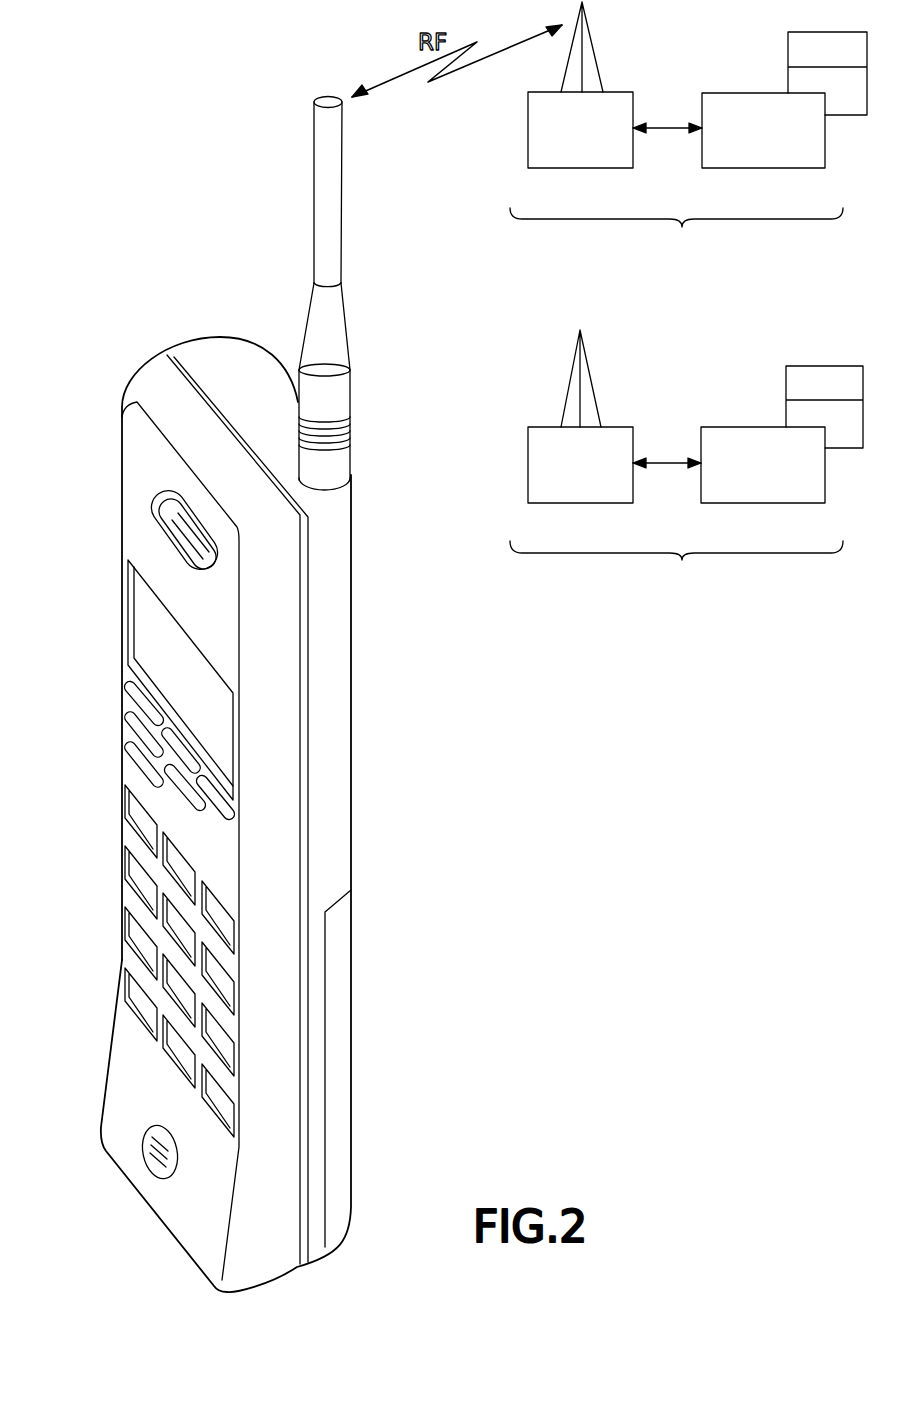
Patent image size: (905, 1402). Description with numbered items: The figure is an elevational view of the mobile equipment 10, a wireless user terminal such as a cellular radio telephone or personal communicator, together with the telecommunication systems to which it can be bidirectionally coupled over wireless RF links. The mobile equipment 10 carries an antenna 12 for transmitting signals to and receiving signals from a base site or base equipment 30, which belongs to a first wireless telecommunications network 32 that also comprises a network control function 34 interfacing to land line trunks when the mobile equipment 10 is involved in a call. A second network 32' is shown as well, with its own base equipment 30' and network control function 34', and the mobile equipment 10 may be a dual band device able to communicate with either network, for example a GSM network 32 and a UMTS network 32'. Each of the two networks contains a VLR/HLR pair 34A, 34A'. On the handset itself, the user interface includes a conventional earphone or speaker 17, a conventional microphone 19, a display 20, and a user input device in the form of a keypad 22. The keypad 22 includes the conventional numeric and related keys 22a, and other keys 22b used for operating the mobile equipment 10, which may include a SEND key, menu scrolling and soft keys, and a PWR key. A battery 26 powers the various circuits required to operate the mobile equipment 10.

The mobile equipment 10 is at (100, 350).
The antenna 12 is at (320, 177).
The speaker 17 is at (170, 515).
The microphone 19 is at (153, 1163).
The display 20 is at (143, 630).
The keypad 22 is at (230, 977).
The numeric and related keys 22a is at (138, 1000).
The other keys 22b is at (182, 753).
The battery 26 is at (345, 1043).
The base equipment 30 is at (583, 104).
The first wireless telecommunications network 32 is at (676, 250).
The network control function 34 is at (763, 149).
The VLR/HLR pair 34A is at (795, 68).
The base equipment 30' is at (587, 435).
The second network 32' is at (676, 583).
The network control function 34' is at (763, 484).
The VLR/HLR pair 34A' is at (793, 402).